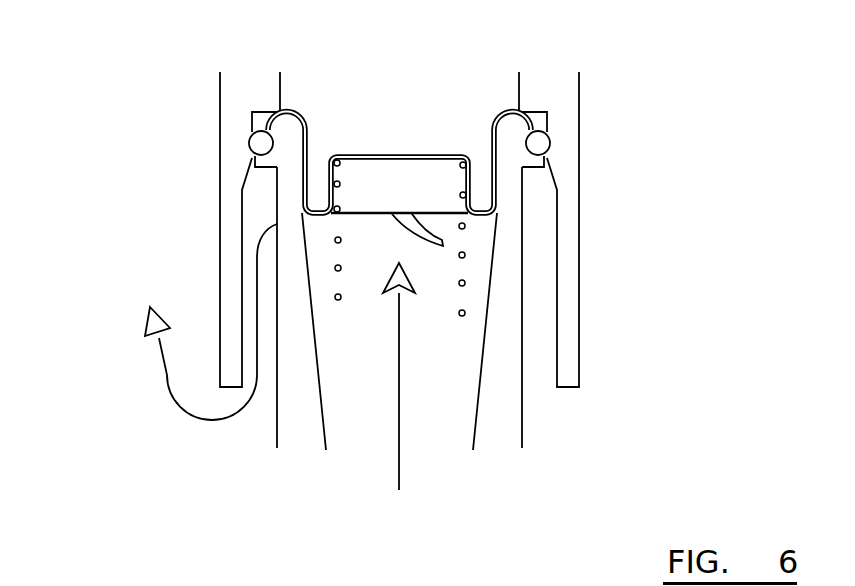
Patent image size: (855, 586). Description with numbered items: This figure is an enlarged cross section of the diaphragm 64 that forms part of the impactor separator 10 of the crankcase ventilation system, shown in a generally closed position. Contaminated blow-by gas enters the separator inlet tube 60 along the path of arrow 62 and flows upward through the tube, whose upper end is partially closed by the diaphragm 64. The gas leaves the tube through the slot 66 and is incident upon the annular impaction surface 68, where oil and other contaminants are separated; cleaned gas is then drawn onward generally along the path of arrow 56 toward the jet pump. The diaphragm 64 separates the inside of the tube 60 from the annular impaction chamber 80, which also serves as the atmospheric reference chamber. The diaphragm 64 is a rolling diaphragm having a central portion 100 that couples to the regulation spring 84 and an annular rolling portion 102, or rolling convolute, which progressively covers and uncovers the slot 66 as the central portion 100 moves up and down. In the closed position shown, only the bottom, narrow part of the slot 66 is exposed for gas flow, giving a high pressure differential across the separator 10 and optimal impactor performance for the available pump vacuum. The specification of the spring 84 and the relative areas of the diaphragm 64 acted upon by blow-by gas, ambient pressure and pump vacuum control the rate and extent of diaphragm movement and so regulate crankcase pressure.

The separator 10 is at (146, 232).
The arrow 56 is at (195, 420).
The separator inlet tube 60 is at (297, 423).
The arrow 62 is at (400, 430).
The diaphragm 64 is at (433, 155).
The slot 66 is at (437, 238).
The annular impaction surface 68 is at (243, 233).
The annular impaction chamber 80 is at (412, 155).
The regulation spring 84 is at (465, 285).
The central portion 100 is at (400, 155).
The annular rolling portion 102 is at (301, 188).